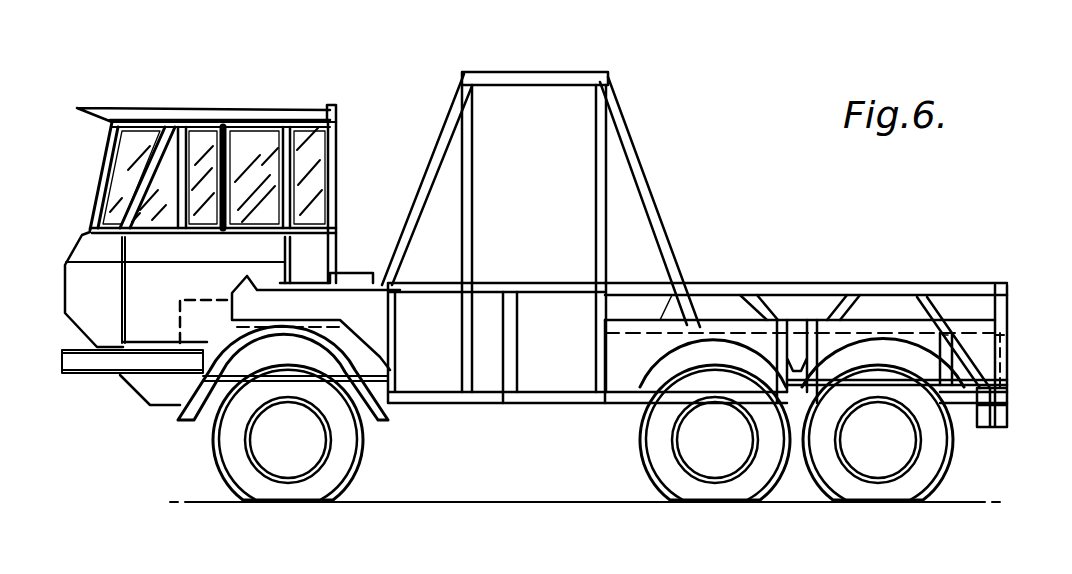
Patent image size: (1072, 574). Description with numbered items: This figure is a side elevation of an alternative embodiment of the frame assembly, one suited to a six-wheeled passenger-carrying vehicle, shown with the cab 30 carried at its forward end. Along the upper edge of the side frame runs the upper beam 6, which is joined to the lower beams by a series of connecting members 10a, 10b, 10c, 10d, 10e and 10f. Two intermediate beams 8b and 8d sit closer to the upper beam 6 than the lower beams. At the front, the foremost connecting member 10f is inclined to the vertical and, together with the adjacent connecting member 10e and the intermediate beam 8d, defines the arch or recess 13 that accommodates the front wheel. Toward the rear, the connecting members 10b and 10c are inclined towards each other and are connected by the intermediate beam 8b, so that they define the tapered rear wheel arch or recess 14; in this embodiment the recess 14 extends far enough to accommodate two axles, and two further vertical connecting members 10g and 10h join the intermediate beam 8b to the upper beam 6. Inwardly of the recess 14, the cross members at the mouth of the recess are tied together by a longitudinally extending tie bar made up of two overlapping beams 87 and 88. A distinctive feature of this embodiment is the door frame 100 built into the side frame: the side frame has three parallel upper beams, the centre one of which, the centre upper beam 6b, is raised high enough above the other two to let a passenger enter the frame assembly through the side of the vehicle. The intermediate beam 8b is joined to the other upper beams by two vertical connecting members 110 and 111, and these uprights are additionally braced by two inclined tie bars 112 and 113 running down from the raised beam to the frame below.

The cab 30 is at (270, 110).
The door frame 100 is at (638, 114).
The upper beam 6 is at (702, 292).
The centre upper beam 6b is at (520, 72).
The intermediate beam 8b is at (790, 340).
The intermediate beam 8d is at (355, 315).
The connecting member 10a is at (1003, 310).
The inclined connecting member 10b is at (932, 312).
The inclined connecting member 10c is at (660, 305).
The connecting member 10d is at (508, 355).
The connecting member 10e is at (385, 360).
The foremost connecting member 10f is at (228, 312).
The vertical connecting member 10g is at (772, 300).
The vertical connecting member 10h is at (838, 302).
The front wheel arch recess 13 is at (205, 418).
The rear wheel arch recess 14 is at (630, 428).
The overlapping beam 87 is at (640, 395).
The overlapping beam 88 is at (850, 345).
The vertical connecting member 110 is at (470, 258).
The vertical connecting member 111 is at (598, 196).
The tie bar 112 is at (655, 212).
The tie bar 113 is at (440, 145).